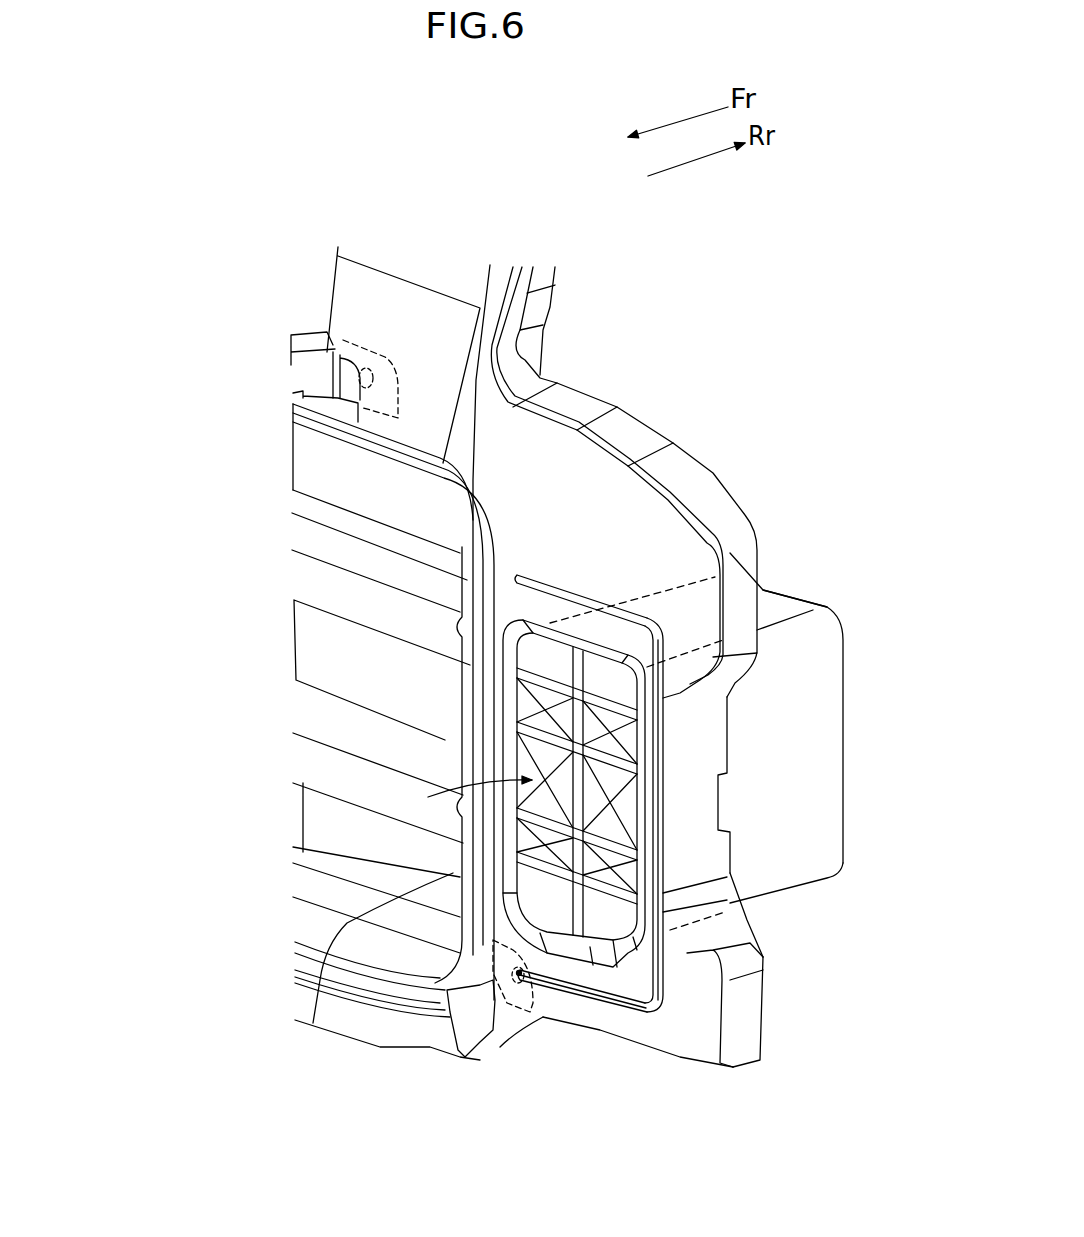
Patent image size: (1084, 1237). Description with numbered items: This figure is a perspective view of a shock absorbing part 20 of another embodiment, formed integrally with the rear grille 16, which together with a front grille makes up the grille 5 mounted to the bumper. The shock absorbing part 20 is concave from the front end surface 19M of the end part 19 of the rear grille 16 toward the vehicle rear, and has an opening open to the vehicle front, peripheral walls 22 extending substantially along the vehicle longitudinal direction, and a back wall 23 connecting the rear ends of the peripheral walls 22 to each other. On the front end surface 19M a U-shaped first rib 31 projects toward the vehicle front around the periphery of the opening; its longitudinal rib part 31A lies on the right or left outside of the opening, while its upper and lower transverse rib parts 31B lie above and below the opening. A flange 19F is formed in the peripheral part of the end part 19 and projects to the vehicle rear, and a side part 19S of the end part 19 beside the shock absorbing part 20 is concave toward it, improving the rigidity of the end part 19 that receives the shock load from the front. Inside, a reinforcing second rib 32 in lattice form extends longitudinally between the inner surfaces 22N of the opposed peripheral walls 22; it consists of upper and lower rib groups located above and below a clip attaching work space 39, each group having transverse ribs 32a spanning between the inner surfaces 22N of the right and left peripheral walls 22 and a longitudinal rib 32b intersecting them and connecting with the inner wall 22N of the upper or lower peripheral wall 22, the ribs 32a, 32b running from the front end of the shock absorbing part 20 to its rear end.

The grille 5 is at (300, 653).
The rear grille 16 is at (200, 355).
The end part 19 is at (693, 1053).
The flange 19F is at (708, 770).
The side part 19S is at (713, 858).
The front end surface 19M is at (688, 953).
The shock absorbing part 20 is at (853, 618).
The peripheral wall 22 is at (805, 793).
The inner surface 22N is at (530, 753).
The back wall 23 is at (848, 724).
The first rib 31 is at (677, 781).
The longitudinal rib part 31A is at (680, 733).
The transverse rib part 31B is at (565, 593).
The second rib 32 is at (612, 766).
The transverse rib 32a is at (535, 688).
The longitudinal rib 32b is at (540, 640).
The clip attaching work space 39 is at (462, 795).